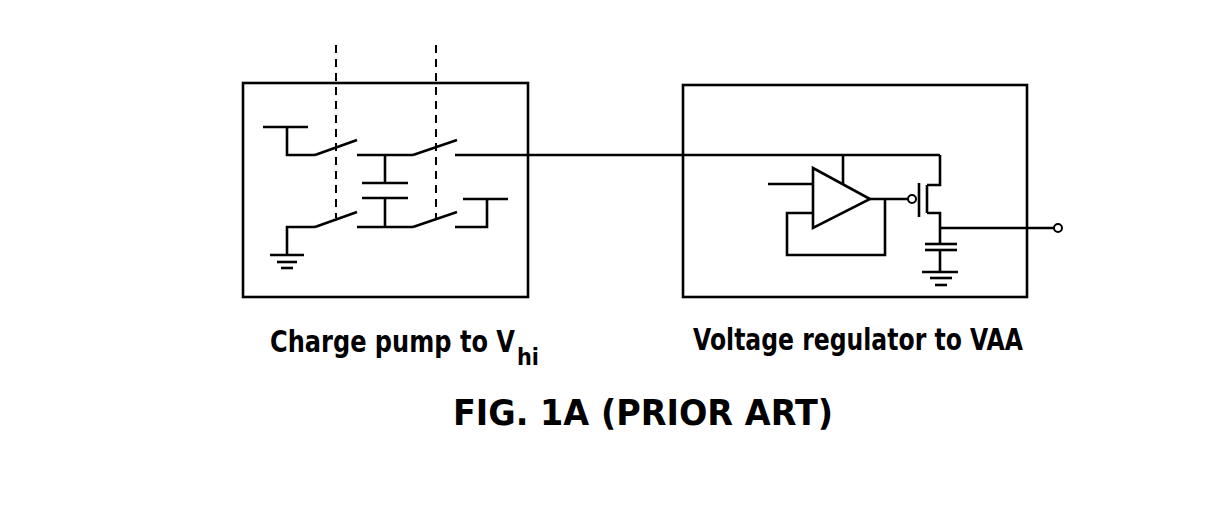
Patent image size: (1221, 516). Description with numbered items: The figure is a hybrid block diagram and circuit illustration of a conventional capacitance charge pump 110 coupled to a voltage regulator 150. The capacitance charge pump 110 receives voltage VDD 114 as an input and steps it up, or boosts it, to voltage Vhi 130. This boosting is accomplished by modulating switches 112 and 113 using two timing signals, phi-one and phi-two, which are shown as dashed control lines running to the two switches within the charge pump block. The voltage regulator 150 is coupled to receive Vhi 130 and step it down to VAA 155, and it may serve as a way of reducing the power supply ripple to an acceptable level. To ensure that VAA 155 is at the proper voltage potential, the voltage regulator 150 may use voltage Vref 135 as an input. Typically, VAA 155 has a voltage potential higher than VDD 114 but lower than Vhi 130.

The capacitance charge pump 110 is at (243, 297).
The switch 112 is at (337, 128).
The switch 113 is at (437, 128).
The voltage VDD 114 is at (262, 118).
The voltage Vhi 130 is at (598, 108).
The voltage Vref 135 is at (725, 188).
The voltage regulator 150 is at (1027, 297).
The voltage VAA 155 is at (1105, 197).